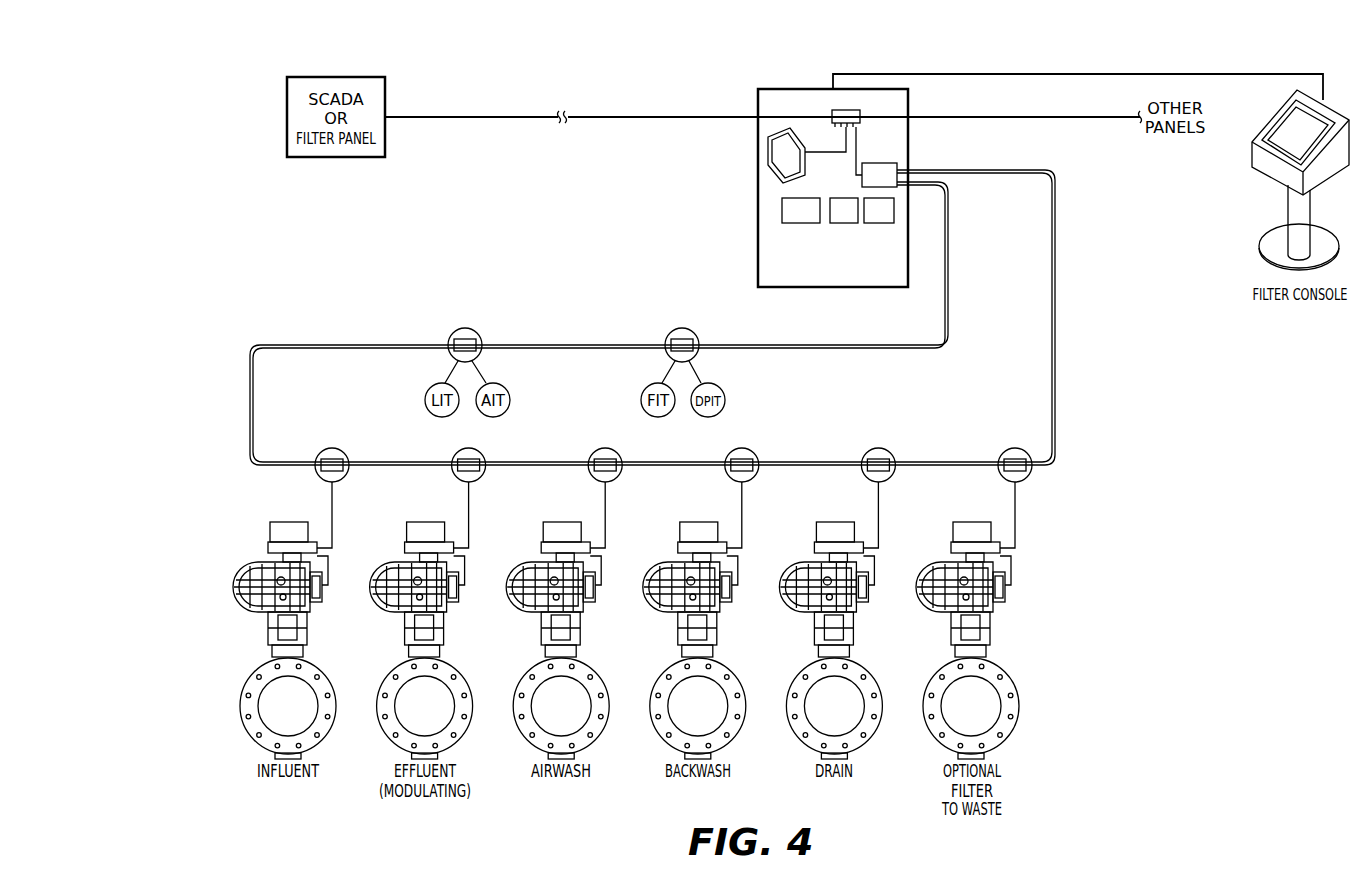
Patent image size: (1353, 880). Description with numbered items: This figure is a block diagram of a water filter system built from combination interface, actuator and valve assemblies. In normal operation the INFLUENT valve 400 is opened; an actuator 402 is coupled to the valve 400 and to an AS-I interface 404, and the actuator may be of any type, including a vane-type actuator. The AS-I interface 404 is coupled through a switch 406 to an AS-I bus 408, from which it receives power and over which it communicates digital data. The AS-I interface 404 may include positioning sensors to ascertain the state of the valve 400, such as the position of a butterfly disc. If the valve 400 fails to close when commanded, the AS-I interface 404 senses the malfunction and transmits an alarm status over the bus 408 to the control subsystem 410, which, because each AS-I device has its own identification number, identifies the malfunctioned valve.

The INFLUENT valve 400 is at (243, 725).
The actuator 402 is at (233, 607).
The AS-I interface 404 is at (259, 527).
The switch 406 is at (312, 480).
The AS-I bus 408 is at (942, 317).
The control subsystem 410 is at (758, 222).